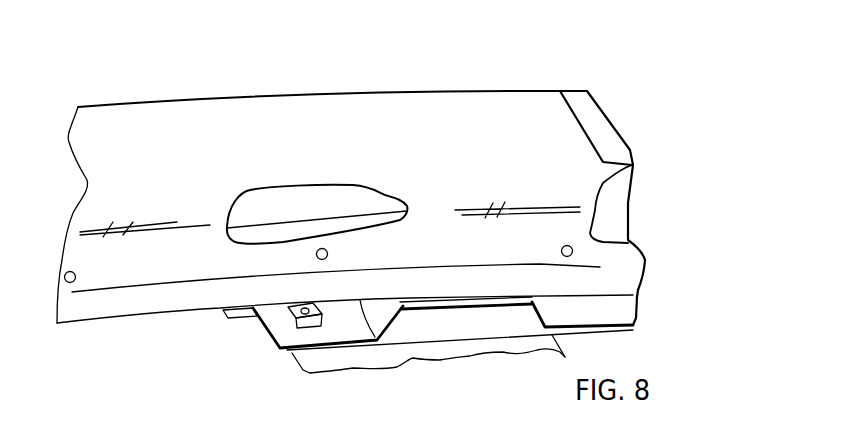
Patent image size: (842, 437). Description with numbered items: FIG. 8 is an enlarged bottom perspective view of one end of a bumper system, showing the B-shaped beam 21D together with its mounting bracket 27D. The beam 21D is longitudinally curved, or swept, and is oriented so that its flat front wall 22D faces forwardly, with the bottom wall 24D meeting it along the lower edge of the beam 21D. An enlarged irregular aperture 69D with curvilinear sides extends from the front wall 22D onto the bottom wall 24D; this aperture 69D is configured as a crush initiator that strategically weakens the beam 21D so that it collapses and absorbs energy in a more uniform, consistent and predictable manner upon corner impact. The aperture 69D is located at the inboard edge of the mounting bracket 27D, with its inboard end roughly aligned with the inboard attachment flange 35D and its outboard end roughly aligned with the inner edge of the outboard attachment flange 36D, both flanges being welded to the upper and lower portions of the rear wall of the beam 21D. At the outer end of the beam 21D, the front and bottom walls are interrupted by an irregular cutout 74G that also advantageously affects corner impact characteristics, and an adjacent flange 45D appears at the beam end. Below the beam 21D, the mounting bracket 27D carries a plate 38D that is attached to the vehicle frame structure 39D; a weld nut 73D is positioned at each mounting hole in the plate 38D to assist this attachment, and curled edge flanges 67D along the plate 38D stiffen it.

The B-shaped beam 21D is at (486, 70).
The front wall 22D is at (398, 107).
The irregular aperture 69D is at (297, 200).
The flange 45D is at (598, 122).
The irregular cutout 74G is at (612, 228).
The bottom wall 24D is at (102, 273).
The inboard attachment flange 35D is at (221, 310).
The mounting bracket 27D is at (252, 345).
The outboard attachment flange 36D is at (423, 302).
The weld nut 73D is at (315, 300).
The vehicle frame structure 39D is at (307, 363).
The plate 38D is at (477, 330).
The curled edge flange 67D is at (441, 343).